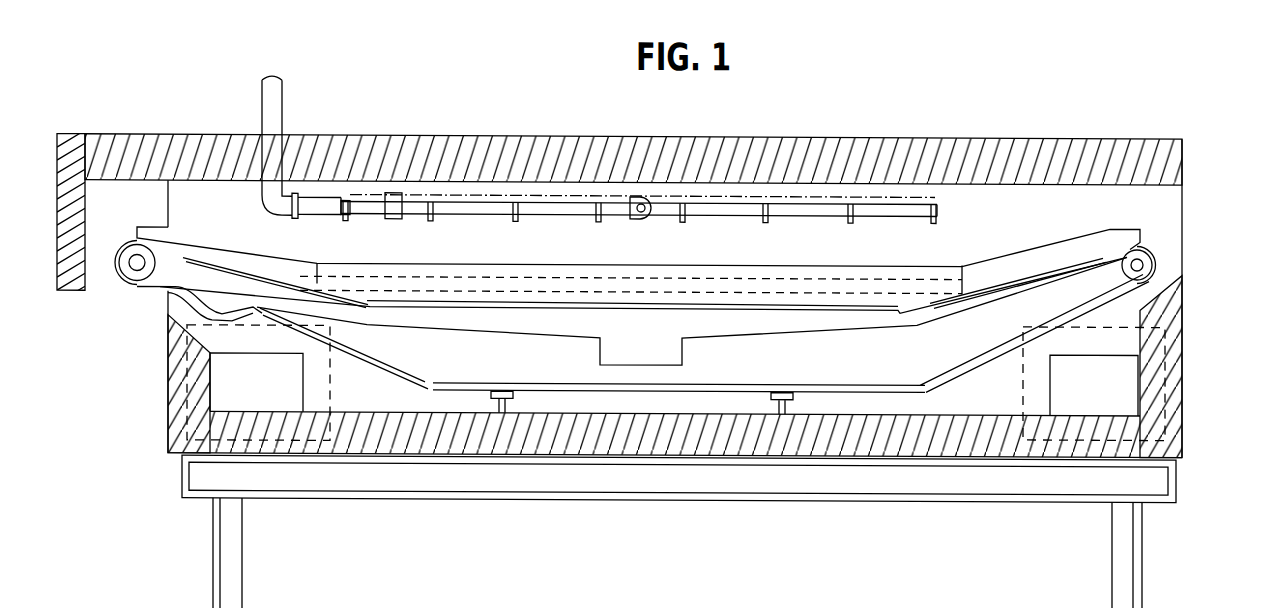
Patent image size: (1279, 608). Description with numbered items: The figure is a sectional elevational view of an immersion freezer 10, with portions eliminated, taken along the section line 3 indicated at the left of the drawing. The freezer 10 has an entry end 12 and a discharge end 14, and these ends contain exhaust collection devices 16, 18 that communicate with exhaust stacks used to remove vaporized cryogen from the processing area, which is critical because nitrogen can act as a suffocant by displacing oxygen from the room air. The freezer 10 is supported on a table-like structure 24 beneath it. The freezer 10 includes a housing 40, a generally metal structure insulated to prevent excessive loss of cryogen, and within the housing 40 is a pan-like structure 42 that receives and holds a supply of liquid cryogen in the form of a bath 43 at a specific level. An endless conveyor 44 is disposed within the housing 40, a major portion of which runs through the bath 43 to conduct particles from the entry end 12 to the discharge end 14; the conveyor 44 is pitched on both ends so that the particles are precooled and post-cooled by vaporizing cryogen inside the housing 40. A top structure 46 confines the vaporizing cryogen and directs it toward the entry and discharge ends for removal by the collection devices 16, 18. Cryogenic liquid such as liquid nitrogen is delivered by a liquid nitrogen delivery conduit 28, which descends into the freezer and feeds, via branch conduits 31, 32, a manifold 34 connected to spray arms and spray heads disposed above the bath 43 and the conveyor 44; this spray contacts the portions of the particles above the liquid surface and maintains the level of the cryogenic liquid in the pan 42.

The section line 3- 3 is at (240, 94).
The immersion freezer 10 is at (616, 122).
The entry end 12 is at (1182, 222).
The discharge end 14 is at (168, 308).
The exhaust collection device 16 is at (1085, 354).
The exhaust collection device 18 is at (263, 357).
The table-like structure 24 is at (765, 497).
The liquid nitrogen delivery conduit 28 is at (277, 119).
The branch conduit 31 is at (312, 213).
The branch conduit 32 is at (638, 218).
The manifold 34 is at (787, 214).
The housing 40 is at (1182, 360).
The pan-like structure 42 is at (787, 332).
The bath 43 is at (712, 263).
The endless conveyor 44 is at (1170, 256).
The top structure 46 is at (1010, 136).